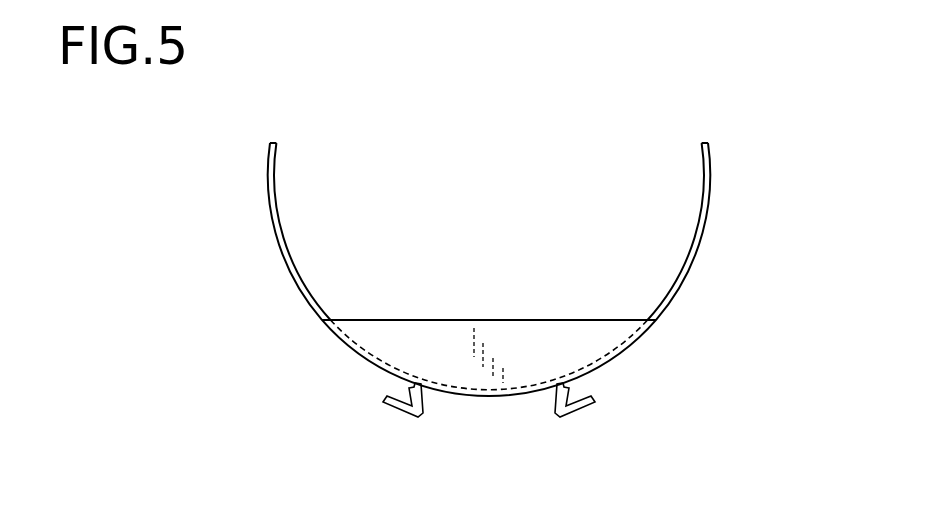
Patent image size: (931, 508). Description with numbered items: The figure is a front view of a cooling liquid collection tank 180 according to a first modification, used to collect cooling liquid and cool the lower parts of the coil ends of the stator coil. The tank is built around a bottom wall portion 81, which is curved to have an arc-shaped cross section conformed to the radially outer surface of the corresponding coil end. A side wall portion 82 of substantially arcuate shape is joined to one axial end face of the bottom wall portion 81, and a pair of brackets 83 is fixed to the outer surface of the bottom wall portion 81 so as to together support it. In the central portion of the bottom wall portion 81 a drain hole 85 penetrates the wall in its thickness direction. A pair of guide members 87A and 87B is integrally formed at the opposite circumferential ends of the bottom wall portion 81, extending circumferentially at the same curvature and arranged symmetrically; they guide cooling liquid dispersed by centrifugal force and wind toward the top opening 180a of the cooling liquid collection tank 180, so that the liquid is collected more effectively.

The cooling liquid collection tank 180 is at (577, 133).
The top opening 180a is at (487, 320).
The guide member 87A is at (703, 237).
The guide member 87B is at (276, 235).
The side wall portion 82 is at (603, 333).
The bottom wall portion 81 is at (615, 360).
The bracket 83 is at (390, 411).
The drain hole 85 is at (487, 395).